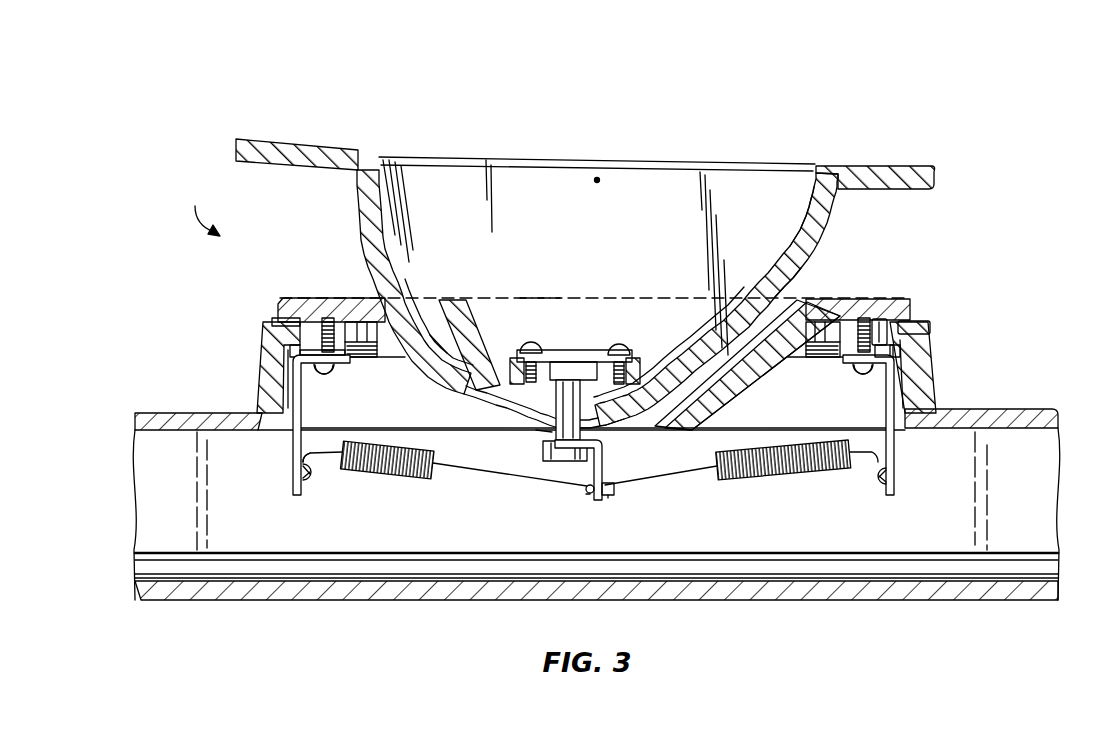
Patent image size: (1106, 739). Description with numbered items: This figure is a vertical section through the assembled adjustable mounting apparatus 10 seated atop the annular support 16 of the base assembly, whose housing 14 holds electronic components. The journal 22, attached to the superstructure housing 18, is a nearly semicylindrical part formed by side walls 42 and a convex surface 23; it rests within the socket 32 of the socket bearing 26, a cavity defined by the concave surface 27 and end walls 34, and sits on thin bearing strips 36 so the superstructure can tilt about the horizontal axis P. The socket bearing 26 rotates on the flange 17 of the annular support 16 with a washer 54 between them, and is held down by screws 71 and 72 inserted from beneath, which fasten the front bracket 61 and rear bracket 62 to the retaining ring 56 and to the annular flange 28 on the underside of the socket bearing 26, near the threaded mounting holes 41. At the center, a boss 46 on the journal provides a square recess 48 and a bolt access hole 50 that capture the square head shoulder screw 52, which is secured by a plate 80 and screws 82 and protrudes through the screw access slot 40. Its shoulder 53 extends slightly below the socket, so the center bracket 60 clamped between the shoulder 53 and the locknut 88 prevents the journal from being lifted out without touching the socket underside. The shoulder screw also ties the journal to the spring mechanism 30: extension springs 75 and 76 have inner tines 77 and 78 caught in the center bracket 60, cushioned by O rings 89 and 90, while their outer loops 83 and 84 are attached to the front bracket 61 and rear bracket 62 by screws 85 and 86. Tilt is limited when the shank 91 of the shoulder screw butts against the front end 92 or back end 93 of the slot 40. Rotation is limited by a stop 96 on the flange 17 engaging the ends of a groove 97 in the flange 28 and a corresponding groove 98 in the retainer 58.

The adjustable mounting apparatus 10 is at (204, 197).
The housing 14 is at (1040, 410).
The annular support 16 is at (935, 383).
The flange 17 is at (270, 343).
The housing 18 is at (306, 167).
The journal 22 is at (851, 224).
The convex surface 23 is at (829, 246).
The socket bearing 26 is at (919, 297).
The concave surface 27 is at (448, 348).
The annular flange 28 is at (365, 358).
The spring mechanism 30 is at (553, 543).
The socket 32 is at (484, 293).
The end walls 34 is at (540, 300).
The bearing strips 36 is at (814, 301).
The screw access slot 40 is at (484, 402).
The threaded mounting holes 41 is at (320, 320).
The side walls 42 is at (641, 178).
The boss 46 is at (514, 362).
The square recess 48 is at (585, 368).
The bolt access hole 50 is at (586, 350).
The square head shoulder screw 52 is at (570, 360).
The shoulder 53 is at (543, 455).
The washer 54 is at (276, 320).
The retaining ring 56 is at (338, 356).
The retainer 58 is at (292, 352).
The center bracket 60 is at (597, 500).
The front bracket 61 is at (290, 445).
The rear bracket 62 is at (897, 443).
The screw 71 is at (331, 372).
The screw 72 is at (862, 372).
The extension spring 75 is at (383, 480).
The extension spring 76 is at (792, 480).
The tine 77 is at (616, 488).
The tine 78 is at (584, 489).
The plate 80 is at (640, 364).
The screws 82 is at (531, 350).
The loop 83 is at (306, 484).
The loop 84 is at (880, 486).
The screw 85 is at (311, 482).
The screw 86 is at (874, 480).
The locknut 88 is at (552, 464).
The O ring 89 is at (612, 496).
The O ring 90 is at (586, 494).
The shank 91 is at (545, 430).
The front end 92 is at (462, 397).
The back end 93 is at (622, 422).
The stop 96 is at (922, 340).
The groove 97 is at (880, 330).
The groove 98 is at (881, 358).
The horizontal axis P is at (596, 192).